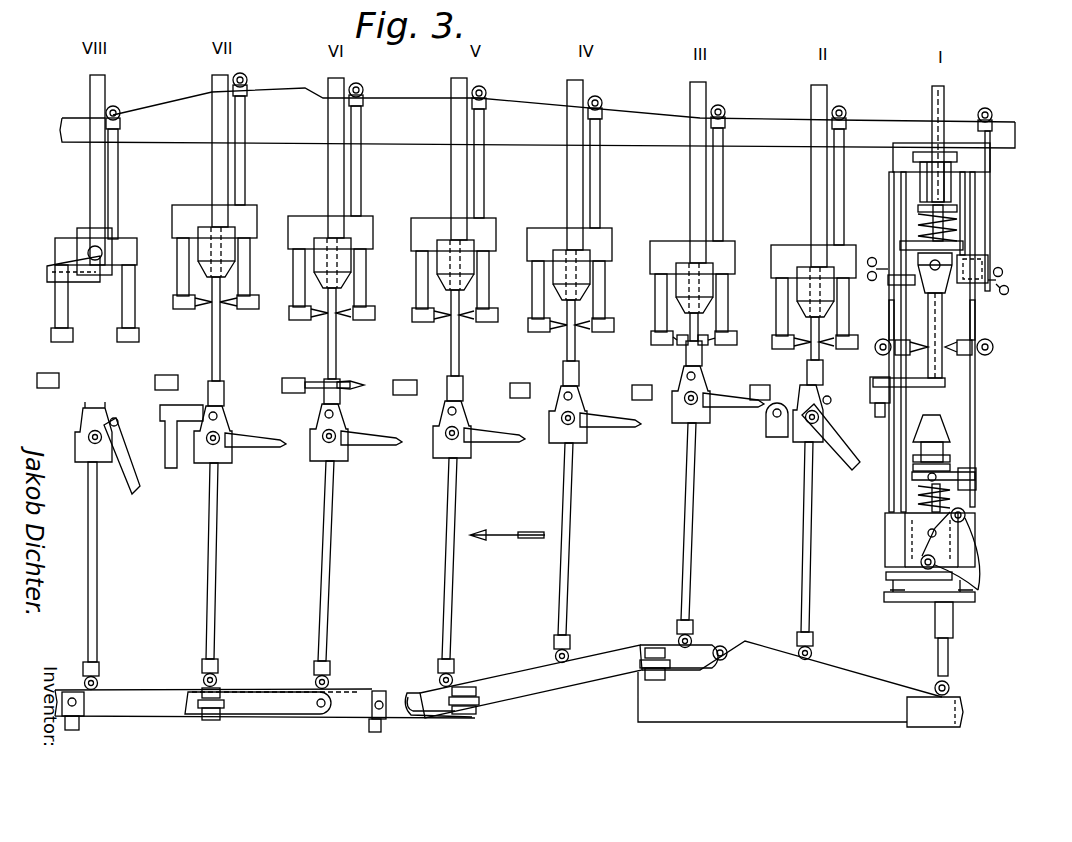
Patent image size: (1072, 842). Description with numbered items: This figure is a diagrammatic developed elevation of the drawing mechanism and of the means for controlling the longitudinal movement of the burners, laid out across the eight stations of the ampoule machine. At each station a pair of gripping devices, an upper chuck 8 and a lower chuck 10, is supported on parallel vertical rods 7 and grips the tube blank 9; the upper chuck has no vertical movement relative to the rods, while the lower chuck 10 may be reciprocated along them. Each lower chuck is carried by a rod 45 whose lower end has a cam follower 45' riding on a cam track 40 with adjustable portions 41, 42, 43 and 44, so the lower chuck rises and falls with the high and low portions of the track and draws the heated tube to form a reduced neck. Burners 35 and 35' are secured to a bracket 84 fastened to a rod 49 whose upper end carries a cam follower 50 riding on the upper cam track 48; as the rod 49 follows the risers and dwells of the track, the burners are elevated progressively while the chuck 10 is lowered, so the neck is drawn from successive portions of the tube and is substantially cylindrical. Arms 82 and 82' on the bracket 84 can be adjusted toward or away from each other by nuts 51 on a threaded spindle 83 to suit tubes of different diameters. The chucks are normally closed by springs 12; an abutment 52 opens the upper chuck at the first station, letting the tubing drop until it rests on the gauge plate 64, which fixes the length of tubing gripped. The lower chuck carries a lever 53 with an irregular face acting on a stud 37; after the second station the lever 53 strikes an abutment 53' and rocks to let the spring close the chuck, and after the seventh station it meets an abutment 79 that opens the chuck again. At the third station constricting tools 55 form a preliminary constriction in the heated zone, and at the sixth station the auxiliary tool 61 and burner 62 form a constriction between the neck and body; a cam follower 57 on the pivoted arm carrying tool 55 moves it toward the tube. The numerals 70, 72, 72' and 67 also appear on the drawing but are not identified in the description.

The vertical rod 7 is at (890, 473).
The upper chuck 8 is at (80, 230).
The tube blank 9 is at (692, 190).
The lower chuck 10 is at (78, 456).
The lever head 70 is at (532, 430).
The spring 12 is at (952, 499).
The spring 72 is at (966, 498).
The burner 35 is at (550, 333).
The burner 35' is at (623, 333).
The stud 37 is at (886, 573).
The cam track 40 is at (148, 696).
The adjustable portion of cam track 41 is at (858, 721).
The adjustable portion of cam track 42 is at (700, 666).
The adjustable portion of cam track 43 is at (556, 686).
The adjustable portion of cam track 44 is at (283, 718).
The rod 45 is at (965, 639).
The cam follower 45' is at (970, 683).
The upper cam track 48 is at (418, 96).
The rod 49 is at (976, 229).
The cam follower 50 is at (993, 114).
The nut 51 is at (874, 258).
The cam follower 57 is at (940, 256).
The abutment 52 is at (50, 281).
The lever 53 is at (964, 549).
The abutment 53' is at (771, 433).
The constricting tool 55 is at (708, 349).
The auxiliary constricting tool 61 is at (350, 385).
The burner 62 is at (296, 394).
The gauge plate 64 is at (907, 397).
The bar 67 is at (642, 387).
The spring 72' is at (972, 215).
The abutment 79 is at (160, 409).
The arm 82 is at (875, 320).
The arm 82' is at (1003, 320).
The threaded spindle 83 is at (1009, 290).
The bracket 84 is at (990, 262).